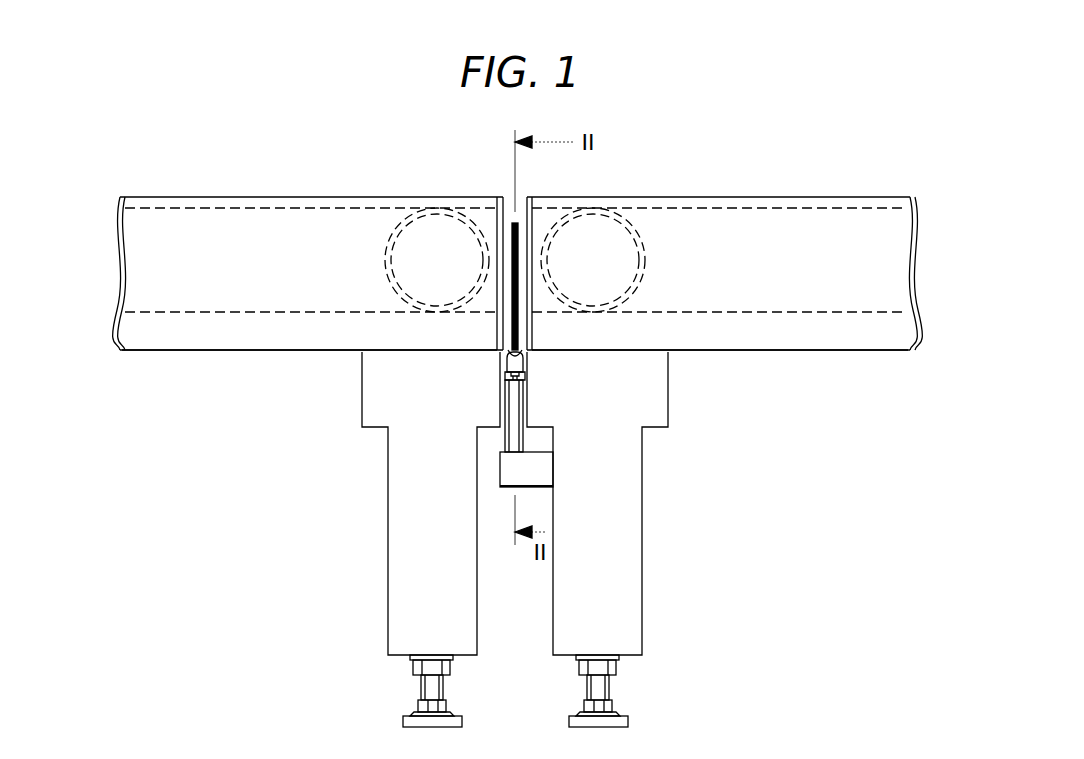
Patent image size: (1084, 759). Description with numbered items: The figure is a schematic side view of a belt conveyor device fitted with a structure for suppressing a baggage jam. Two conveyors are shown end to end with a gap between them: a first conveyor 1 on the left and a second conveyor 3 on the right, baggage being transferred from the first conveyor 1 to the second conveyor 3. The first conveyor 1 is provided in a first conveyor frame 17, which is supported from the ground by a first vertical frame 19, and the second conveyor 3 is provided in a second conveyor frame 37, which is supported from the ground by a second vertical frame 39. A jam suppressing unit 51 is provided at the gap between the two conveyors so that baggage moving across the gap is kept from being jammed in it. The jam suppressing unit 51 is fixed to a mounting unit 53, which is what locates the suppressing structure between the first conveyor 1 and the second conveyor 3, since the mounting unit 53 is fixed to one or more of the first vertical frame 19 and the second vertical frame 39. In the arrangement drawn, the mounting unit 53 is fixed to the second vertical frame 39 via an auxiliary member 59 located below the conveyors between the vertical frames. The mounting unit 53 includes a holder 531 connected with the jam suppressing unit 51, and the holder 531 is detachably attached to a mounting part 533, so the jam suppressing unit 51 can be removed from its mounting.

The first conveyor 1 is at (263, 200).
The second conveyor 3 is at (766, 200).
The first conveyor frame 17 is at (219, 341).
The first vertical frame 19 is at (403, 486).
The second conveyor frame 37 is at (845, 341).
The second vertical frame 39 is at (617, 574).
The jam suppressing unit 51 is at (512, 226).
The mounting unit 53 is at (655, 416).
The holder 531 is at (515, 366).
The mounting part 533 is at (513, 419).
The auxiliary member 59 is at (512, 472).